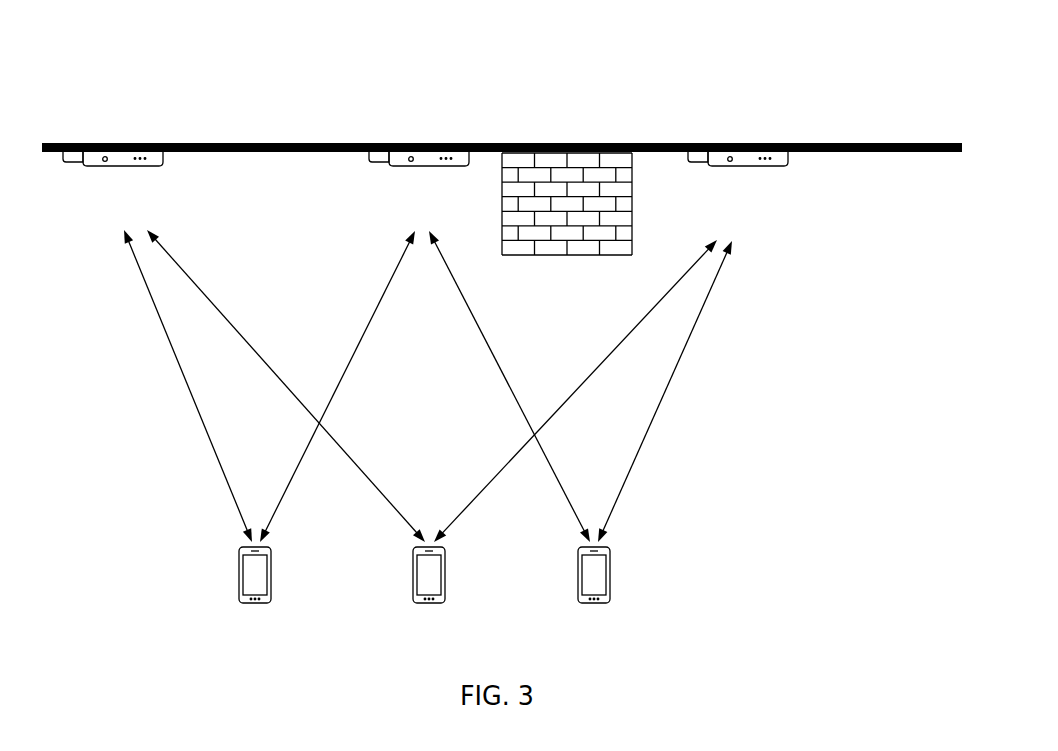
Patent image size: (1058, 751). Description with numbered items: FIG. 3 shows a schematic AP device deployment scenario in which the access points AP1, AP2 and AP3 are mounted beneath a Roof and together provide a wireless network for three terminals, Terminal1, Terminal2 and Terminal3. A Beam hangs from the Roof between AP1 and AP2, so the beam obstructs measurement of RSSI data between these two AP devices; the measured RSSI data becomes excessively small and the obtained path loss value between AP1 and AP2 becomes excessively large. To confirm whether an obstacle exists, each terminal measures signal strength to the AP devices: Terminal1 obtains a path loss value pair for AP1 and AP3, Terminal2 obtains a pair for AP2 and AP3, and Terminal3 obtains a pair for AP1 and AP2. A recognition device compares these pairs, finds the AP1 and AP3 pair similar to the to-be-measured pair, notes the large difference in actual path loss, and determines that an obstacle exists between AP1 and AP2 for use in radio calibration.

The roof Roof is at (863, 138).
The beam Beam is at (567, 219).
The AP 1 AP1 is at (419, 179).
The AP 2 AP2 is at (738, 180).
The AP 3 AP3 is at (113, 178).
The terminal 1 Terminal1 is at (254, 592).
The terminal 2 Terminal2 is at (429, 592).
The terminal 3 Terminal3 is at (593, 592).